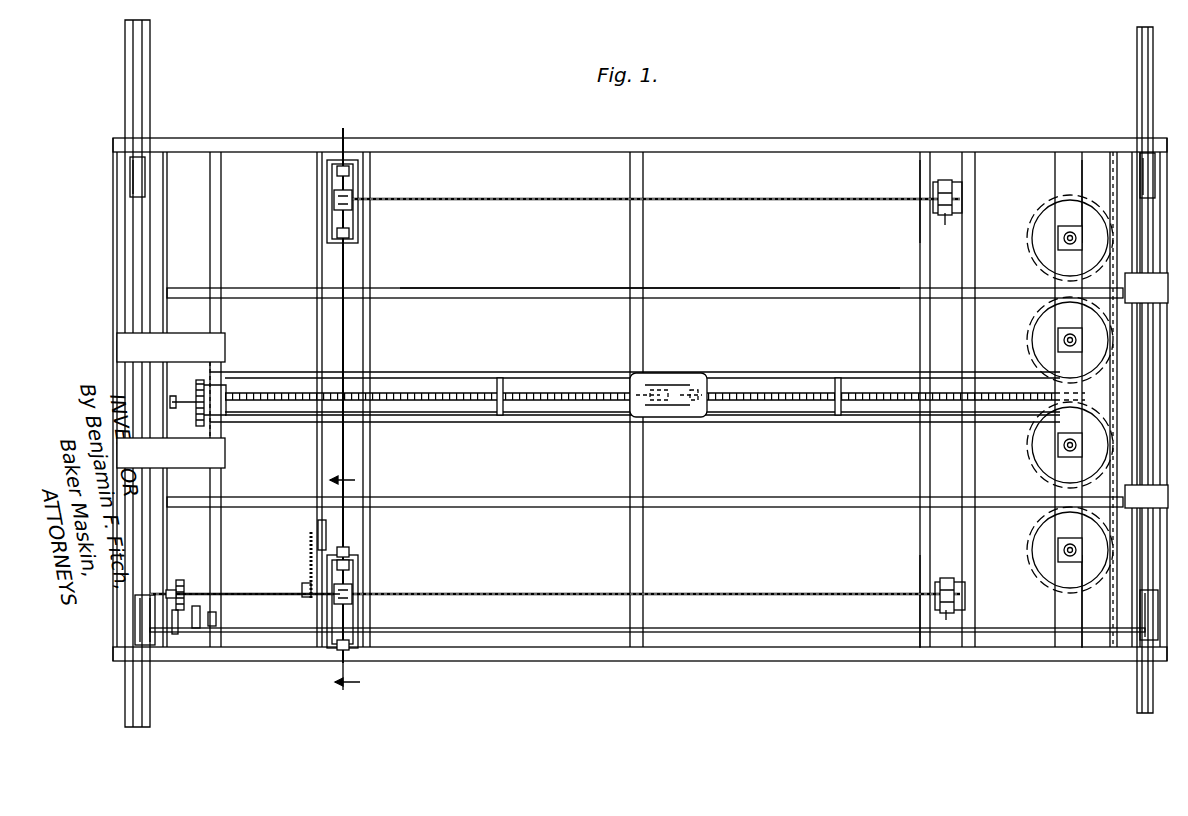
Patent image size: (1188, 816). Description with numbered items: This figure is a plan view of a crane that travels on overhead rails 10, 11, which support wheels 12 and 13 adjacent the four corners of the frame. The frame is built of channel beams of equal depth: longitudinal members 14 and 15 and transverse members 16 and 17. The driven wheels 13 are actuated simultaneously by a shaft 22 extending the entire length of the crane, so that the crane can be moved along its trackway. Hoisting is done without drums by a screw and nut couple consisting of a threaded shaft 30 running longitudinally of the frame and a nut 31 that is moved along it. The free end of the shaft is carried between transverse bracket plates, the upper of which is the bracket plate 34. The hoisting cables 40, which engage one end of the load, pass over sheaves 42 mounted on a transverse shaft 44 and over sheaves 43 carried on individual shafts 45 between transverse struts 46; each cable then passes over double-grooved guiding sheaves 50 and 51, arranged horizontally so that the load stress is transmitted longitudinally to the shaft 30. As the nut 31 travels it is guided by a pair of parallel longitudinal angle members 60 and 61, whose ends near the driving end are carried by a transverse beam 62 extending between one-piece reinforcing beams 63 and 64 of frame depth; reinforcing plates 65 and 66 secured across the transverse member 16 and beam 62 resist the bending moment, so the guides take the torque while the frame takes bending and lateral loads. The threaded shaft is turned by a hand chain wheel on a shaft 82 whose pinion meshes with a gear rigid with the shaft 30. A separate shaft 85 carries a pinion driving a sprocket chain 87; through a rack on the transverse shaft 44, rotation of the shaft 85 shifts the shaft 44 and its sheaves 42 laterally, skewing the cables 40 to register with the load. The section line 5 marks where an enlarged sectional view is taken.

The section line 5 is at (357, 480).
The overhead rail 10 is at (137, 92).
The overhead rail 11 is at (1140, 86).
The wheel 12 is at (128, 175).
The wheel 13 is at (150, 660).
The longitudinal member 14 is at (832, 137).
The longitudinal member 15 is at (866, 662).
The transverse member 16 is at (157, 258).
The transverse member 17 is at (1130, 578).
The shaft 22 is at (533, 640).
The threaded shaft 30 is at (542, 390).
The nut 31 is at (678, 380).
The transverse bracket plate 34 is at (1060, 170).
The hoisting cable 40 is at (445, 205).
The sheave 42 is at (352, 198).
The sheave 43 is at (930, 205).
The transverse shaft 44 is at (348, 330).
The individual shaft 45 is at (946, 225).
The transverse strut 46 is at (335, 262).
The guiding sheave 50 is at (1036, 266).
The guiding sheave 51 is at (1030, 332).
The angle member 60 is at (782, 372).
The angle member 61 is at (775, 422).
The transverse beam 62 is at (218, 326).
The reinforcing beam 63 is at (542, 287).
The reinforcing beam 64 is at (562, 508).
The reinforcing plate 65 is at (120, 342).
The reinforcing plate 66 is at (210, 470).
The shaft 82 is at (172, 408).
The shaft 85 is at (270, 592).
The sprocket chain 87 is at (314, 530).